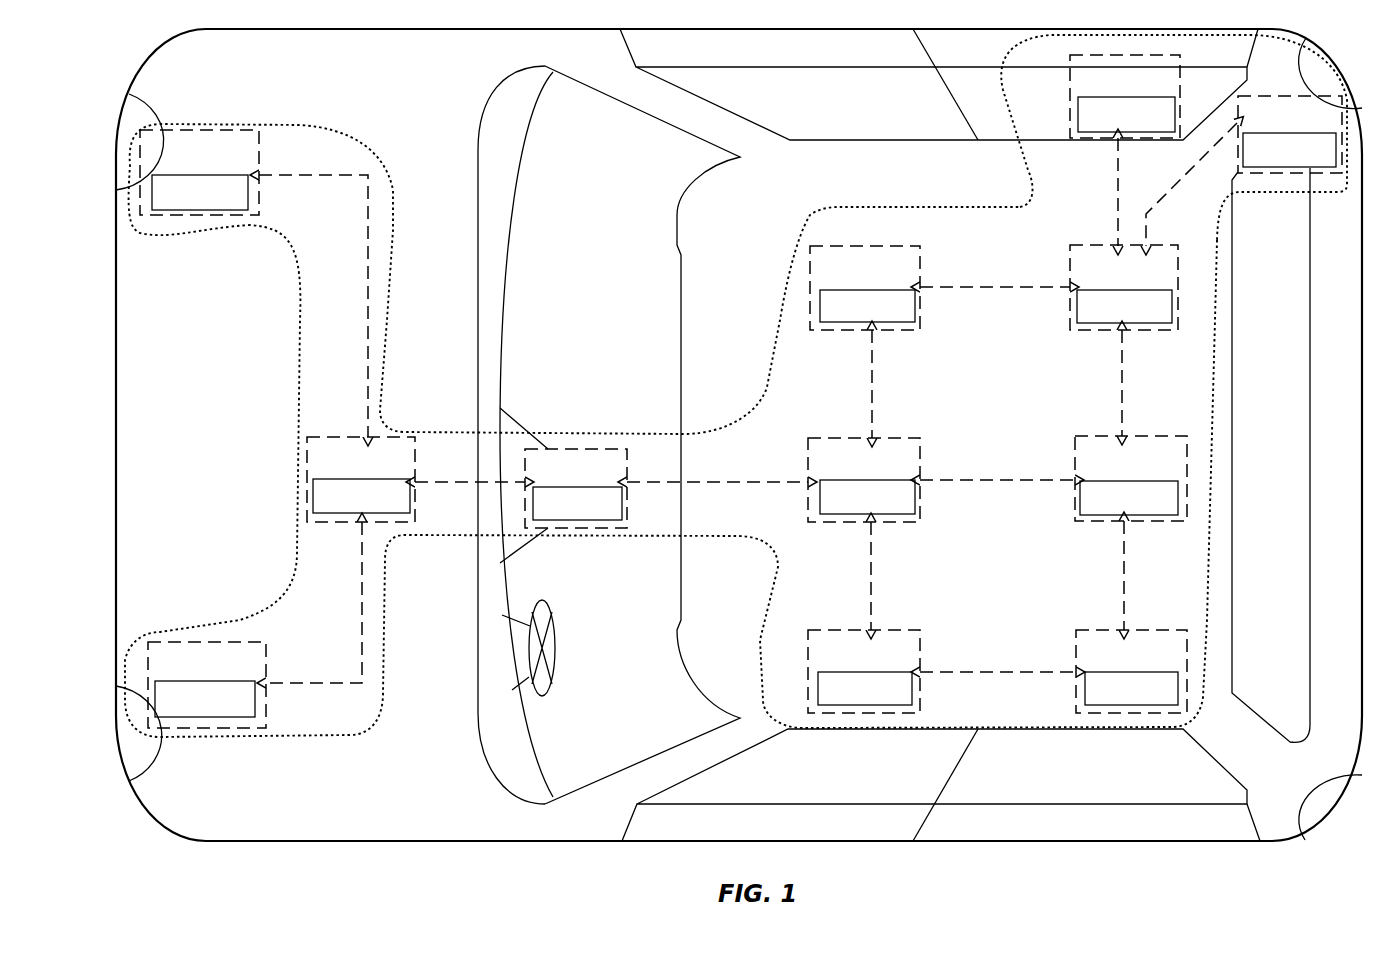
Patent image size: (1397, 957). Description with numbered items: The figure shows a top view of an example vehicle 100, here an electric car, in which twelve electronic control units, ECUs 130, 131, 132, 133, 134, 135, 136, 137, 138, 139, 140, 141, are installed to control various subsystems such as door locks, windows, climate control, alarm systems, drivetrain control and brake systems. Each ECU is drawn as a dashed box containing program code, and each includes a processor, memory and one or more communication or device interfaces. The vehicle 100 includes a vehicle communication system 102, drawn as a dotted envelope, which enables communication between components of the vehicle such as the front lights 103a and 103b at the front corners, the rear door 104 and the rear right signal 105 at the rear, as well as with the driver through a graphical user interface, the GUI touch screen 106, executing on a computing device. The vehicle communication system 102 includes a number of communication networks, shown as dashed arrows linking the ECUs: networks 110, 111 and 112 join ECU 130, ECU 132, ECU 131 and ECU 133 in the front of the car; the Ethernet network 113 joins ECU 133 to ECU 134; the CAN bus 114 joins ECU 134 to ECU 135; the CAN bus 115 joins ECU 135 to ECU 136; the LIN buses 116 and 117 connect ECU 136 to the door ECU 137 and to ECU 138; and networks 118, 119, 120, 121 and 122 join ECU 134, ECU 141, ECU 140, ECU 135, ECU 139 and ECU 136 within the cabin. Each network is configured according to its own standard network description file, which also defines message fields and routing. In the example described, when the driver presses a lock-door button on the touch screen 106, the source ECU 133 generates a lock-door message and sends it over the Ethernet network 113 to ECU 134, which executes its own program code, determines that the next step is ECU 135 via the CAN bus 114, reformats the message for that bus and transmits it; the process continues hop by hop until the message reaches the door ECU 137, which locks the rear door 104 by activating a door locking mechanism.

The vehicle 100 is at (94, 80).
The vehicle communication system 102 is at (790, 270).
The front light 103a is at (126, 124).
The front light 103b is at (126, 748).
The rear door 104 is at (1003, 136).
The rear right signal 105 is at (1338, 68).
The graphical user interface (GUI) touch screen 106 is at (503, 412).
The communication network 110 is at (368, 395).
The communication network 111 is at (362, 620).
The communication network 112 is at (450, 470).
The Ethernet network 113 is at (712, 480).
The CAN bus 114 is at (1012, 480).
The CAN bus 115 is at (1122, 386).
The LIN bus 116 is at (1118, 190).
The LIN bus 117 is at (1150, 199).
The communication network 118 is at (871, 578).
The communication network 119 is at (1012, 674).
The communication network 120 is at (1124, 570).
The communication network 121 is at (872, 390).
The communication network 122 is at (1005, 286).
The ECU 130 is at (262, 200).
The ECU 131 is at (272, 713).
The ECU 132 is at (338, 522).
The source ECU 133 is at (646, 512).
The ECU 134 is at (920, 438).
The ECU 135 is at (1075, 522).
The ECU 136 is at (1070, 330).
The door ECU 137 is at (1070, 100).
The ECU 138 is at (1268, 95).
The ECU 139 is at (872, 246).
The ECU 140 is at (1083, 630).
The ECU 141 is at (905, 630).